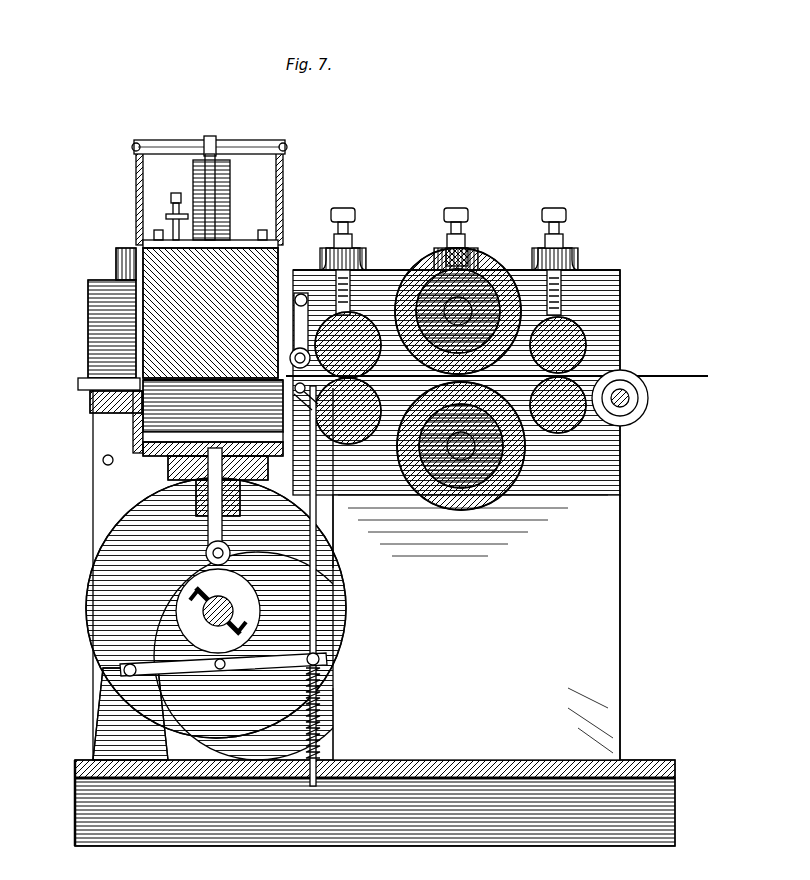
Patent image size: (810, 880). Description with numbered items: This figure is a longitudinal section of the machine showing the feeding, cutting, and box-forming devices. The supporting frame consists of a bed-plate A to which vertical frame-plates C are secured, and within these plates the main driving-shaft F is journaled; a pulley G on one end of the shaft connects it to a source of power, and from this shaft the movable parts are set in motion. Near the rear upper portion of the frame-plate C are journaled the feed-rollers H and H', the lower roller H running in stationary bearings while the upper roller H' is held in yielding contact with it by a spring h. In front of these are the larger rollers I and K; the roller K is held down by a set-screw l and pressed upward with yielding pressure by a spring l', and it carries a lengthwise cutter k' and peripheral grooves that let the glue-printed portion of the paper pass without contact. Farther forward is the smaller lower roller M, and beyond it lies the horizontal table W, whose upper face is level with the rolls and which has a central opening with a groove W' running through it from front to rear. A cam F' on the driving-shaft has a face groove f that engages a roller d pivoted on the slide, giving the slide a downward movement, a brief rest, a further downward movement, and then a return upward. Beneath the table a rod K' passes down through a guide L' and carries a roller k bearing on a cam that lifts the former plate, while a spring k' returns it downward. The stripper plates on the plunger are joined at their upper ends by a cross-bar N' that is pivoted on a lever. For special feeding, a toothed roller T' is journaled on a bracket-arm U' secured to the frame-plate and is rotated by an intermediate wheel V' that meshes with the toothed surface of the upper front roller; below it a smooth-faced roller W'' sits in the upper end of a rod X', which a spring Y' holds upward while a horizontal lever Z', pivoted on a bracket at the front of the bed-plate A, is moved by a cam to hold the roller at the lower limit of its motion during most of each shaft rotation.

The bed-plate A is at (67, 800).
The frame-plate C is at (456, 515).
The roller d is at (176, 452).
The groove f is at (86, 590).
The driving-shaft F is at (218, 611).
The cam F' is at (83, 645).
The pulley G is at (210, 313).
The spring h is at (556, 296).
The lower feed-roller H is at (585, 413).
The upper feed-roller H' is at (587, 345).
The lower roller I is at (420, 492).
The roller k is at (203, 553).
The spring k' is at (448, 237).
The upper roller K is at (458, 297).
The rod K' is at (217, 496).
The set-screw l is at (475, 218).
The spring l' is at (246, 437).
The guide L' is at (195, 497).
The lower roller M is at (255, 552).
The cross-bar N' is at (321, 199).
The toothed roller T' is at (280, 368).
The bracket-arm U' is at (272, 323).
The intermediate wheel V' is at (348, 345).
The table W is at (102, 410).
The groove W' is at (92, 385).
The smooth-faced roller W'' is at (348, 411).
The rod X' is at (364, 527).
The spring Y' is at (352, 539).
The lever Z' is at (258, 656).